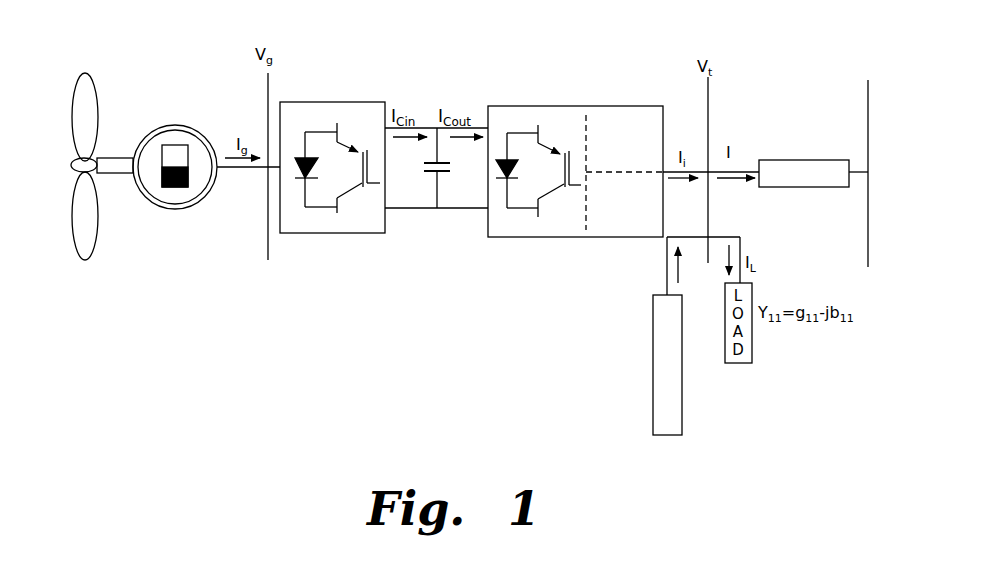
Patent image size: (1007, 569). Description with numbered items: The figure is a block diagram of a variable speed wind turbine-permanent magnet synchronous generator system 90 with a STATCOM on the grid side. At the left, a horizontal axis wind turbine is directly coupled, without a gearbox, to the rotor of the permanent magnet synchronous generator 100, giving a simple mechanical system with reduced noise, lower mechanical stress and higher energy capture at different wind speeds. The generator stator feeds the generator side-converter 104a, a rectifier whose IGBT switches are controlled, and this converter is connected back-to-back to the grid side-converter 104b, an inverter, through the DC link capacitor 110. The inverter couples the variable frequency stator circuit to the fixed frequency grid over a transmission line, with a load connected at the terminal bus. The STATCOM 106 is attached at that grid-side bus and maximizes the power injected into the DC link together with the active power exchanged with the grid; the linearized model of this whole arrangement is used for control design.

The permanent magnet synchronous generator 100 is at (177, 148).
The generator side-converter 104a is at (335, 102).
The grid side-converter 104b is at (542, 106).
The DC link capacitor 110 is at (438, 163).
The STATCOM 106 is at (653, 356).
The variable speed wind turbine-permanent magnet synchronous generator system 90 is at (776, 74).